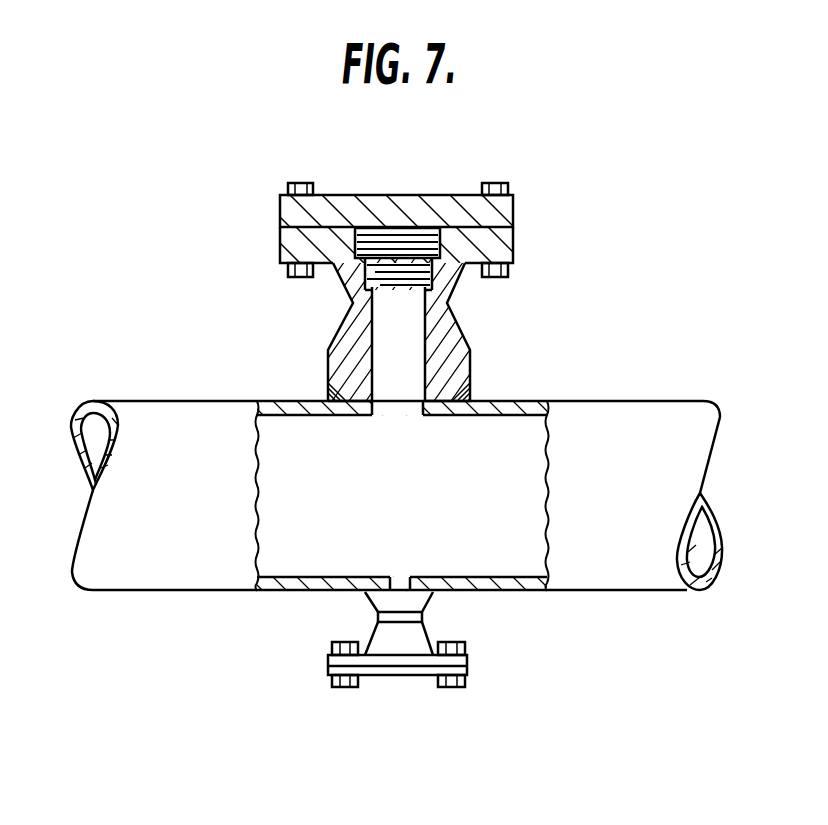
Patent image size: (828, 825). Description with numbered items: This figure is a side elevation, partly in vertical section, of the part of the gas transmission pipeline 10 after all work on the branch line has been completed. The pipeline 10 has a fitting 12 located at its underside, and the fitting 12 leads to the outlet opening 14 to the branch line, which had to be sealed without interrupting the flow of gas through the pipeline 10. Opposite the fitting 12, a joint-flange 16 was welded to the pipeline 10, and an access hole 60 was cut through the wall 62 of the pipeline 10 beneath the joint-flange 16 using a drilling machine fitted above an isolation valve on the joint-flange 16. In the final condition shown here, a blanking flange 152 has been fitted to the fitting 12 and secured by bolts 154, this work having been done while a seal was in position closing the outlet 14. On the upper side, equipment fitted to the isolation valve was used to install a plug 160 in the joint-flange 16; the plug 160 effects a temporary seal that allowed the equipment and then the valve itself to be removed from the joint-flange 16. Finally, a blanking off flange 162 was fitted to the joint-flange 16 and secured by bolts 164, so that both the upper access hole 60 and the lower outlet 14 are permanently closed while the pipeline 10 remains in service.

The gas transmission pipeline 10 is at (647, 505).
The fitting 12 is at (415, 638).
The outlet opening 14 is at (401, 583).
The joint-flange 16 is at (473, 317).
The access hole 60 is at (397, 406).
The wall 62 is at (312, 589).
The blanking flange 152 is at (333, 668).
The bolts 154 is at (450, 687).
The plug 160 is at (340, 270).
The blanking off flange 162 is at (292, 217).
The bolts 164 is at (490, 183).